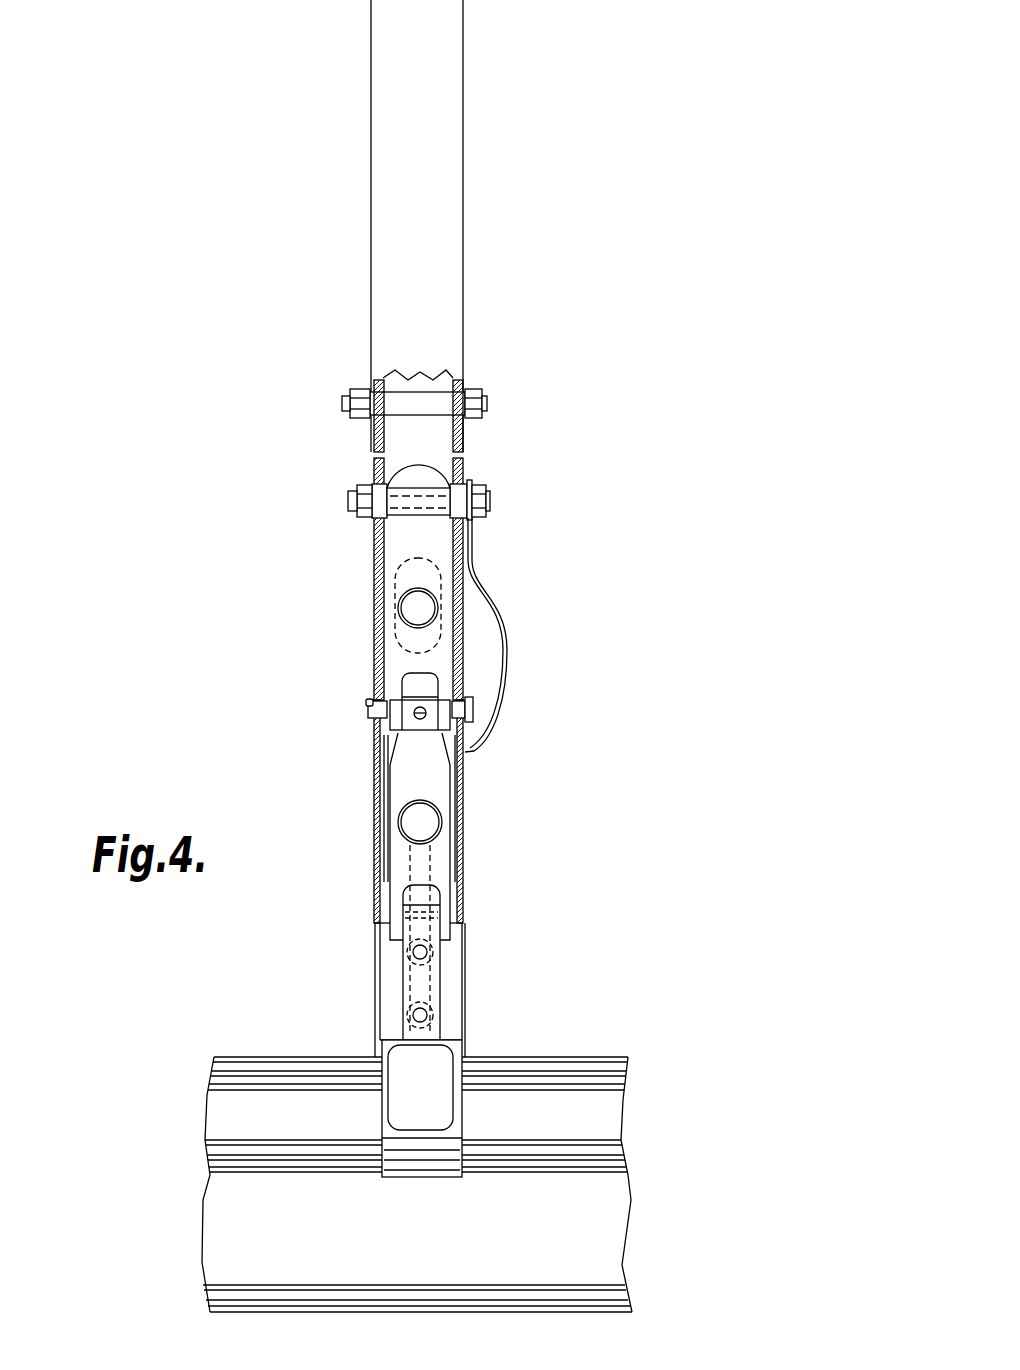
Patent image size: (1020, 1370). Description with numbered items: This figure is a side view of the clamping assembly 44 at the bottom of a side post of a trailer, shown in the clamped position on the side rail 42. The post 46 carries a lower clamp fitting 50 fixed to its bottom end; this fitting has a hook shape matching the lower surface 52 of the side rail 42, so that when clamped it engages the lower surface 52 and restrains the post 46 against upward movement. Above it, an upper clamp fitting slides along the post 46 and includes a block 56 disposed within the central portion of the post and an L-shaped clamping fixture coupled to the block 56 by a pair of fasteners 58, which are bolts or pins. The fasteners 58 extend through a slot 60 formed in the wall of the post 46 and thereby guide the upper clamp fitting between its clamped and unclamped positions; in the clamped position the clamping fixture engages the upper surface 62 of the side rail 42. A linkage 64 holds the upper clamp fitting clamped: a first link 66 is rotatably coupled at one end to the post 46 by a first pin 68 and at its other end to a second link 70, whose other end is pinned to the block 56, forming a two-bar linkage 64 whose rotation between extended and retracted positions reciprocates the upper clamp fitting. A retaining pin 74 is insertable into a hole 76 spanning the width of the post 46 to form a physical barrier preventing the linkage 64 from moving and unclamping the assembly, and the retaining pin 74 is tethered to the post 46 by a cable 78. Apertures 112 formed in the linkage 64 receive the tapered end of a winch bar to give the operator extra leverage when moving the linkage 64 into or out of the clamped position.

The side rail 42 is at (452, 1147).
The clamping assembly 44 is at (585, 716).
The post 46 is at (463, 203).
The lower clamp fitting 50 is at (400, 1178).
The lower surface 52 is at (538, 1173).
The block 56 is at (410, 1003).
The fasteners 58 is at (433, 952).
The slot 60 is at (405, 963).
The upper surface 62 is at (290, 1057).
The linkage 64 is at (358, 634).
The first link 66 is at (445, 732).
The first pin 68 is at (490, 498).
The second link 70 is at (457, 895).
The retaining pin 74 is at (372, 716).
The hole 76 is at (370, 702).
The cable 78 is at (505, 620).
The apertures 112 is at (428, 597).